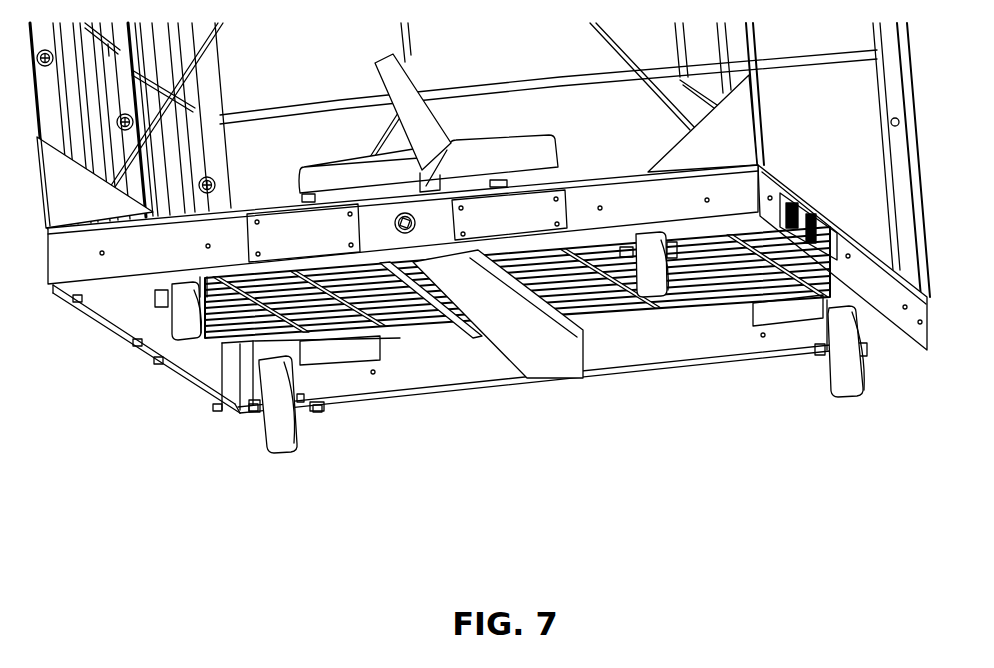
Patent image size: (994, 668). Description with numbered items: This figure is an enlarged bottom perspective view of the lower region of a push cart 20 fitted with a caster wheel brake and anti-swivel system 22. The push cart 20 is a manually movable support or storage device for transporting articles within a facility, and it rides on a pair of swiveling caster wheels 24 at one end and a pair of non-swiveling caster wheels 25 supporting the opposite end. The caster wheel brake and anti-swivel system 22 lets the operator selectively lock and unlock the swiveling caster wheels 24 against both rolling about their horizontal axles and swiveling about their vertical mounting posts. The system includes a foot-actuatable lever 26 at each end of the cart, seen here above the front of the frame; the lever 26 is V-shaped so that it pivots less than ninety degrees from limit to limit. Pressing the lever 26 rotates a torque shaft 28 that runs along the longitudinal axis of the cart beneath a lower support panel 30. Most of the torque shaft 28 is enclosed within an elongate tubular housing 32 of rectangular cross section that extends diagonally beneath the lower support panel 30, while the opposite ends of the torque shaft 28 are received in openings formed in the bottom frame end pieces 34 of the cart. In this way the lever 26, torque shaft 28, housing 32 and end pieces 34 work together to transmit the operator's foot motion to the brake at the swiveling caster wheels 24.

The push cart 20 is at (924, 170).
The caster wheel brake and anti-swivel system 22 is at (495, 370).
The swiveling caster wheels 24 is at (180, 290).
The non-swiveling caster wheels 25 is at (277, 440).
The foot-actuatable lever 26 is at (505, 158).
The torque shaft 28 is at (414, 223).
The lower support panel 30 is at (440, 340).
The elongate tubular housing 32 is at (550, 342).
The bottom frame end pieces 34 is at (236, 228).